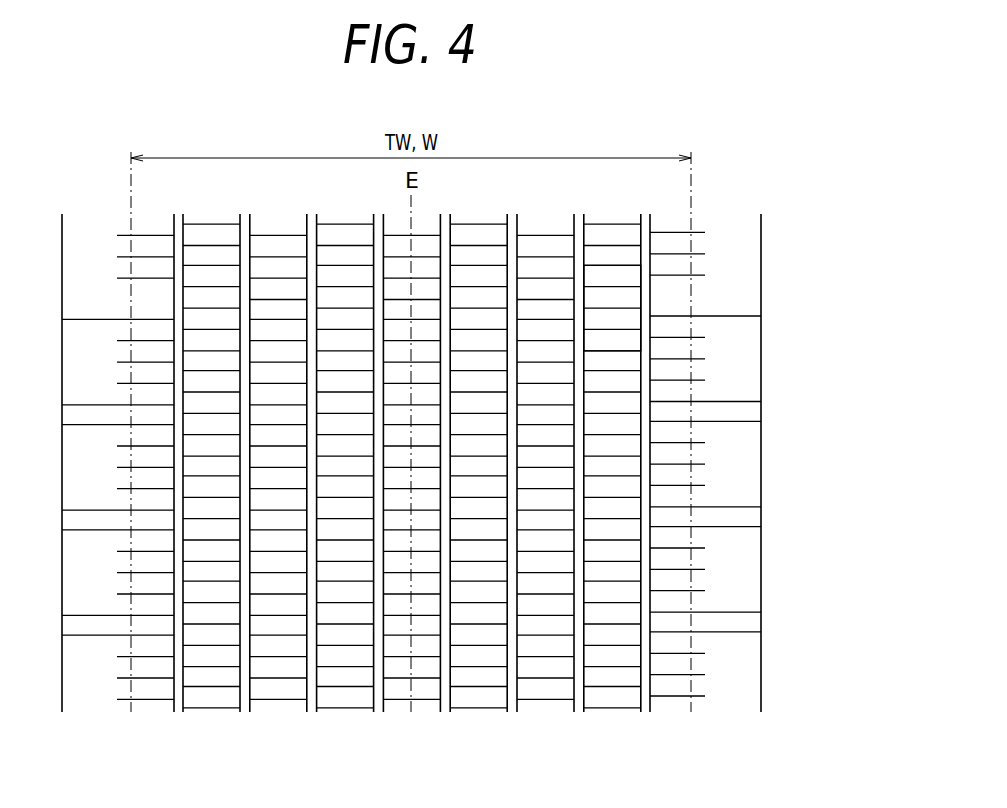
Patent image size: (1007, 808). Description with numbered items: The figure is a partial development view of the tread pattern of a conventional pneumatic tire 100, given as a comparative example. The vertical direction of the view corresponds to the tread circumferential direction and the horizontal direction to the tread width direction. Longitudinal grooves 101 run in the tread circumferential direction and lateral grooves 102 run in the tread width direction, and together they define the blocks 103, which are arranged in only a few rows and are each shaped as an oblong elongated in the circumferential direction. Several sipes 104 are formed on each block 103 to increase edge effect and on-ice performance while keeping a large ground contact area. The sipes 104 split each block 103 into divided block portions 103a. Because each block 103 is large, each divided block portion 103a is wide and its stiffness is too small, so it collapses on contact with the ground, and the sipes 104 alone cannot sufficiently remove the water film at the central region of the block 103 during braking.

The pneumatic tire tread 100 is at (725, 171).
The longitudinal groove 101 is at (579, 230).
The lateral groove 102 is at (617, 254).
The block 103 is at (653, 306).
The sipe 104 is at (613, 327).
The divided block portion 103a is at (618, 342).